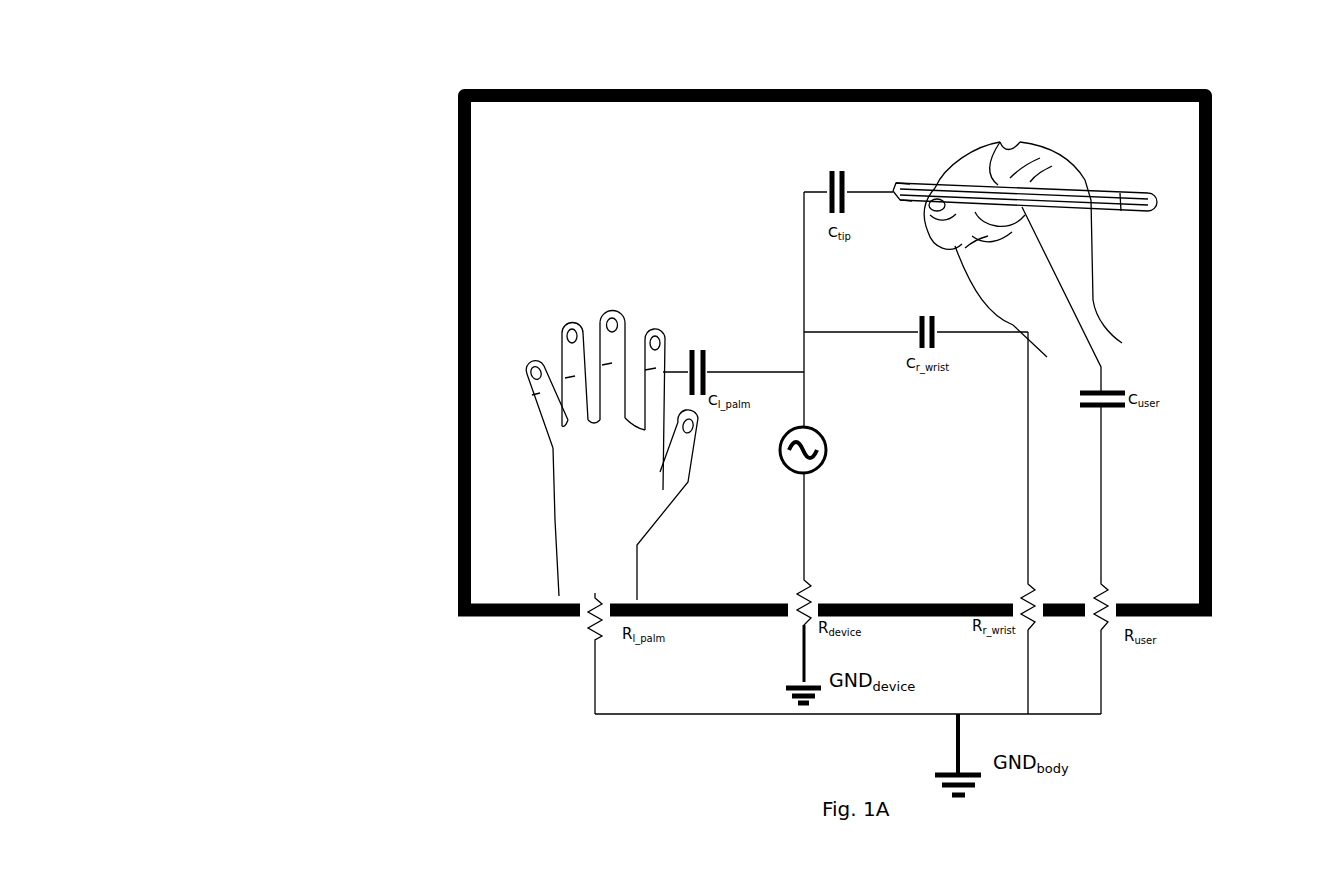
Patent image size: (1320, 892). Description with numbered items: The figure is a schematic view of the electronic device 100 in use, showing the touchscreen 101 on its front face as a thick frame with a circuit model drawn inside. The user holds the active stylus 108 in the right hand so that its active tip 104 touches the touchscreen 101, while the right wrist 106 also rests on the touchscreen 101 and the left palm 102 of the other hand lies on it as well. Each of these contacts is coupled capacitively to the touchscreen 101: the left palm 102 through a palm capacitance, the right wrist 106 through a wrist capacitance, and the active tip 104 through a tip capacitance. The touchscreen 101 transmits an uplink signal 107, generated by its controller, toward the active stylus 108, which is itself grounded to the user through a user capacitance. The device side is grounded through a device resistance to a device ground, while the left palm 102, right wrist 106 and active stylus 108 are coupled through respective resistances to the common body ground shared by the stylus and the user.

The electronic device 100 is at (335, 130).
The touchscreen 101 is at (533, 139).
The left palm 102 is at (554, 453).
The active tip 104 is at (896, 190).
The right wrist 106 is at (1047, 356).
The signal 107 is at (791, 474).
The active stylus 108 is at (1138, 198).